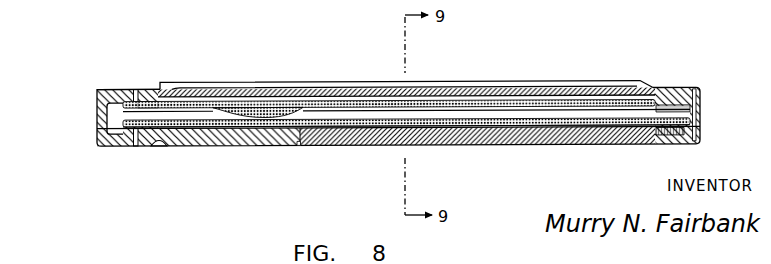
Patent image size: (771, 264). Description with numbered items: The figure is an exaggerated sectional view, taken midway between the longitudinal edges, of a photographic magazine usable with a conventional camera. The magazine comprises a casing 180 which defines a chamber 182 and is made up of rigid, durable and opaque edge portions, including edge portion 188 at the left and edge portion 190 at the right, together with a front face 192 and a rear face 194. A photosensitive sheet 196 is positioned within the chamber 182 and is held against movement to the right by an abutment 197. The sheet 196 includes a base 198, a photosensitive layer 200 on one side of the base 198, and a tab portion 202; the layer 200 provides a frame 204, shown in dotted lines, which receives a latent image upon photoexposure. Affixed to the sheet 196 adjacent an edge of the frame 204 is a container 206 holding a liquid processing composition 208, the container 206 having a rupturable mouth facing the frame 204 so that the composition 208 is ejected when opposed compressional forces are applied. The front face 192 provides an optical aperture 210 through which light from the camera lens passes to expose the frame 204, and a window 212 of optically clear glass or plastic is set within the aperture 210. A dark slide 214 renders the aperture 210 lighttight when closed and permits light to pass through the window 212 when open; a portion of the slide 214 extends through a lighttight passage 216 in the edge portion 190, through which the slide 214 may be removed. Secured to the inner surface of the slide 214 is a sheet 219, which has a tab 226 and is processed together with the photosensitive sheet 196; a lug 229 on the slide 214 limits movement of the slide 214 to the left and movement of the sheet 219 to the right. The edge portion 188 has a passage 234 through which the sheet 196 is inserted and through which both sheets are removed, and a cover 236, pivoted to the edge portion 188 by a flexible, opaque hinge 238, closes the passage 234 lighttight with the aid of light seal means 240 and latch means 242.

The casing 180 is at (564, 150).
The chamber 182 is at (620, 91).
The edge portion 188 is at (126, 113).
The edge portion 190 is at (665, 83).
The front face 192 is at (272, 148).
The rear face 194 is at (303, 84).
The photosensitive sheet 196 is at (512, 100).
The abutment 197 is at (655, 103).
The base 198 is at (440, 102).
The photosensitive layer 200 is at (467, 107).
The tab portion 202 is at (113, 89).
The frame 204 is at (324, 102).
The container 206 is at (292, 112).
The liquid processing composition 208 is at (246, 112).
The optical aperture 210 is at (298, 137).
The window 212 is at (437, 135).
The dark slide 214 is at (208, 128).
The lighttight passage 216 is at (680, 135).
The sheet 219 is at (500, 127).
The tab 226 is at (103, 141).
The lug 229 is at (697, 108).
The passage 234 is at (148, 103).
The cover 236 is at (94, 100).
The flexible, opaque hinge 238 is at (137, 95).
The light seal means 240 is at (135, 143).
The latch means 242 is at (157, 144).